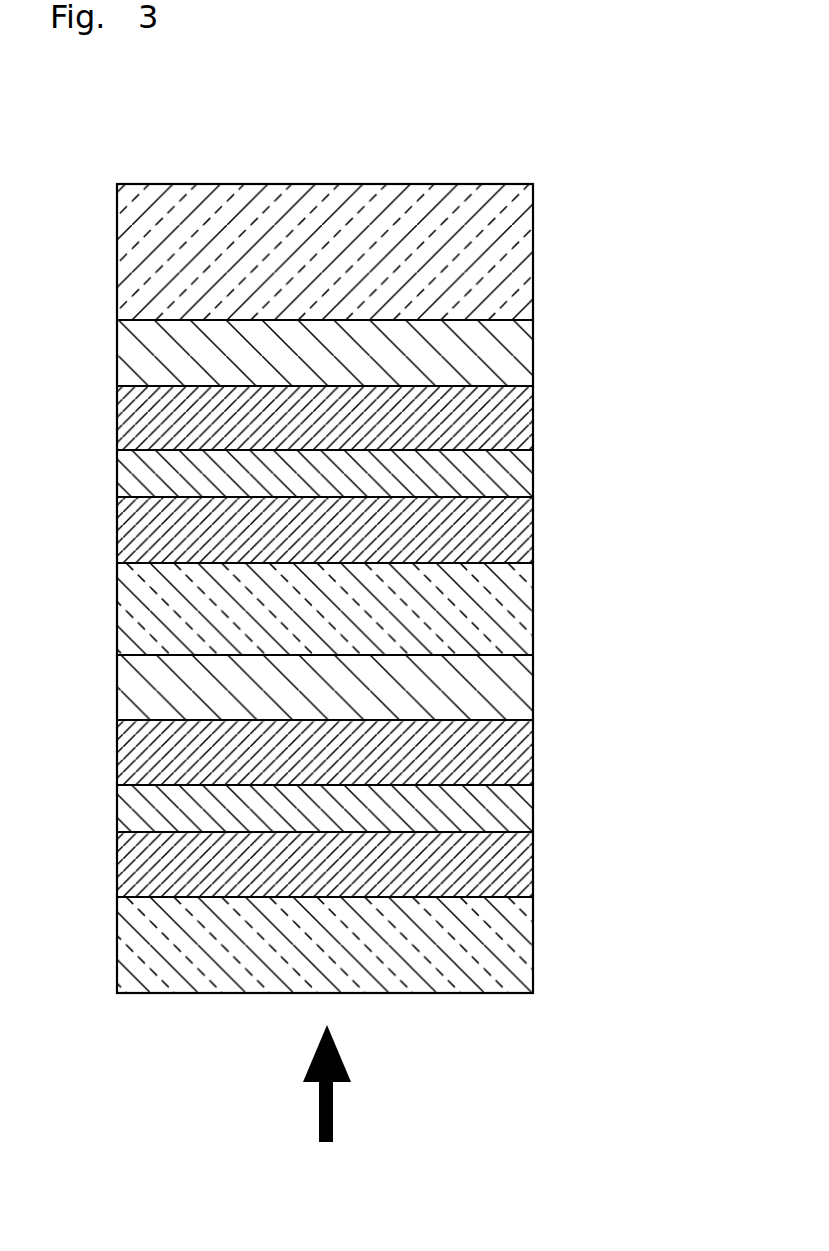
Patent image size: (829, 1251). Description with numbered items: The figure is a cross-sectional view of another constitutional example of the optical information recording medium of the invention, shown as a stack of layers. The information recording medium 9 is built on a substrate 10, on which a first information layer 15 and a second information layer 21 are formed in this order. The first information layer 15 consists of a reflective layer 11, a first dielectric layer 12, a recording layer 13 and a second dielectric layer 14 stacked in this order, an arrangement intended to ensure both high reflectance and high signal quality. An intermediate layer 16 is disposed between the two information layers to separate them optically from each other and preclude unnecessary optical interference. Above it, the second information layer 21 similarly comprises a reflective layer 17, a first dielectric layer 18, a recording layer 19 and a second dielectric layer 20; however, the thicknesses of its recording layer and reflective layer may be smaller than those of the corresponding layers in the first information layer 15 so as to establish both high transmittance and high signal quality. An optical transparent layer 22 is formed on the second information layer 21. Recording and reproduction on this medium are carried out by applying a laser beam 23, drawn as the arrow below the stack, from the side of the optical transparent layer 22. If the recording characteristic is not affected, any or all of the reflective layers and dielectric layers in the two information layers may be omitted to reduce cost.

The information recording medium 9 is at (420, 536).
The substrate 10 is at (508, 262).
The reflective layer 11 is at (508, 353).
The first dielectric layer 12 is at (508, 418).
The recording layer 13 is at (508, 478).
The second dielectric layer 14 is at (376, 530).
The first information layer 15 is at (420, 439).
The intermediate layer 16 is at (508, 615).
The reflective layer 17 is at (508, 692).
The first dielectric layer 18 is at (508, 752).
The recording layer 19 is at (508, 813).
The second dielectric layer 20 is at (376, 864).
The second information layer 21 is at (420, 809).
The optical transparent layer 22 is at (508, 953).
The laser beam 23 is at (333, 1113).